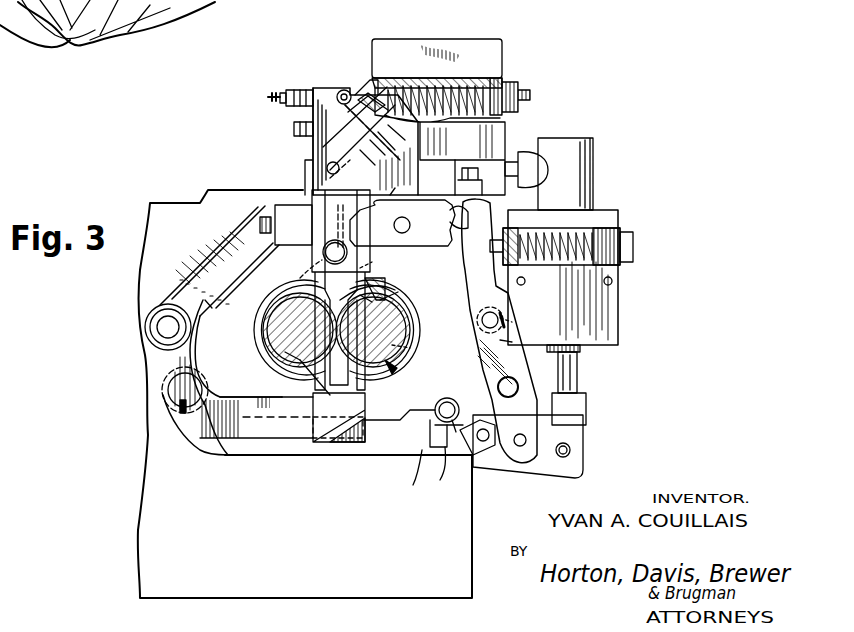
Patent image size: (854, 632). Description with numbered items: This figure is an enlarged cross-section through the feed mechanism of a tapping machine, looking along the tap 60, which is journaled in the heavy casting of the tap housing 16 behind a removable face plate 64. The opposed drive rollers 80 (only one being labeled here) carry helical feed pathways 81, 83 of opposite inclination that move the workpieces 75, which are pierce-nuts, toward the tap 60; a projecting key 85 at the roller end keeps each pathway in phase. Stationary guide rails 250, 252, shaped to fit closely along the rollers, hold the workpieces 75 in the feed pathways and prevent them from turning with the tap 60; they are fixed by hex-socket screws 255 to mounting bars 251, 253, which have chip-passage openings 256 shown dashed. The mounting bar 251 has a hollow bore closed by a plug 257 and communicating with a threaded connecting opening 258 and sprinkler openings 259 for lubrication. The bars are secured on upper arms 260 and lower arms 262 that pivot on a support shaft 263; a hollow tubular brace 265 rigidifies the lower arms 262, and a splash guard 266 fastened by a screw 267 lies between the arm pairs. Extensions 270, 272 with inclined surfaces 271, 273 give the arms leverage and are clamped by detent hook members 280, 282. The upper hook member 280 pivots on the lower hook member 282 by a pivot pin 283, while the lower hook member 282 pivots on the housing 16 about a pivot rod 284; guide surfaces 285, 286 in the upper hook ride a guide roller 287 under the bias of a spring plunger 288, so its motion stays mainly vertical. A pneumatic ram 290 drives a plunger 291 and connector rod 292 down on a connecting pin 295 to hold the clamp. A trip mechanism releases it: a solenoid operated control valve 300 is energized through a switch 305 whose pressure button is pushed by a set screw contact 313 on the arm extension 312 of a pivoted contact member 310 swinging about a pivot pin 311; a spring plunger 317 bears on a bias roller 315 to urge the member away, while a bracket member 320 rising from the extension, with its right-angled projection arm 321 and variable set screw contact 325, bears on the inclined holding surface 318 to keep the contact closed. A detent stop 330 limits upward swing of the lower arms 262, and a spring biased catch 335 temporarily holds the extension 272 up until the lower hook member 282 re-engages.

The tap housing 16 is at (324, 543).
The tap 60 is at (398, 290).
The face plate 64 is at (246, 351).
The workpieces 75 is at (410, 348).
The drive roller 80 is at (408, 333).
The helical feed pathway 81 is at (398, 300).
The helical feed pathway 83 is at (298, 298).
The projecting key 85 is at (285, 352).
The guide rail 250 is at (385, 280).
The mounting bar 251 is at (310, 190).
The guide rail 252 is at (313, 392).
The mounting bar 253 is at (344, 442).
The hex-socket screws 255 is at (376, 290).
The openings 256 is at (318, 280).
The plug 257 is at (335, 252).
The threaded connecting opening 258 is at (378, 200).
The sprinkler openings 259 is at (362, 260).
The upper arms 260 is at (258, 253).
The lower arms 262 is at (283, 452).
The support shaft 263 is at (168, 327).
The hollow tubular brace 265 is at (178, 413).
The splash guard 266 is at (215, 300).
The screw 267 is at (264, 218).
The extension 270 is at (402, 233).
The inclined surface 271 is at (468, 220).
The extension 272 is at (422, 450).
The inclined surface 273 is at (447, 455).
The upper hook member 280 is at (495, 294).
The lower hook member 282 is at (488, 470).
The pivot pin 283 is at (527, 440).
The pivot rod 284 is at (483, 441).
The guide surface 285 is at (474, 312).
The guide surface 286 is at (512, 341).
The guide roller 287 is at (512, 322).
The spring plunger 288 is at (608, 228).
The pneumatic ram 290 is at (618, 320).
The plunger 291 is at (580, 350).
The connector rod 292 is at (586, 398).
The connecting pin 295 is at (571, 449).
The solenoid operated control valve 300 is at (578, 172).
The switch 305 is at (490, 58).
The pivoted contact member 310 is at (361, 141).
The pivot pin 311 is at (342, 163).
The arm extension 312 is at (310, 90).
The set screw contact 313 is at (280, 97).
The bias roller 315 is at (343, 88).
The spring plunger 317 is at (505, 70).
The holding surface 318 is at (355, 176).
The bracket member 320 is at (410, 153).
The right-angled projection arm 321 is at (380, 98).
The variable set screw contact 325 is at (367, 85).
The detent stop 330 is at (449, 407).
The spring biased catch 335 is at (457, 423).